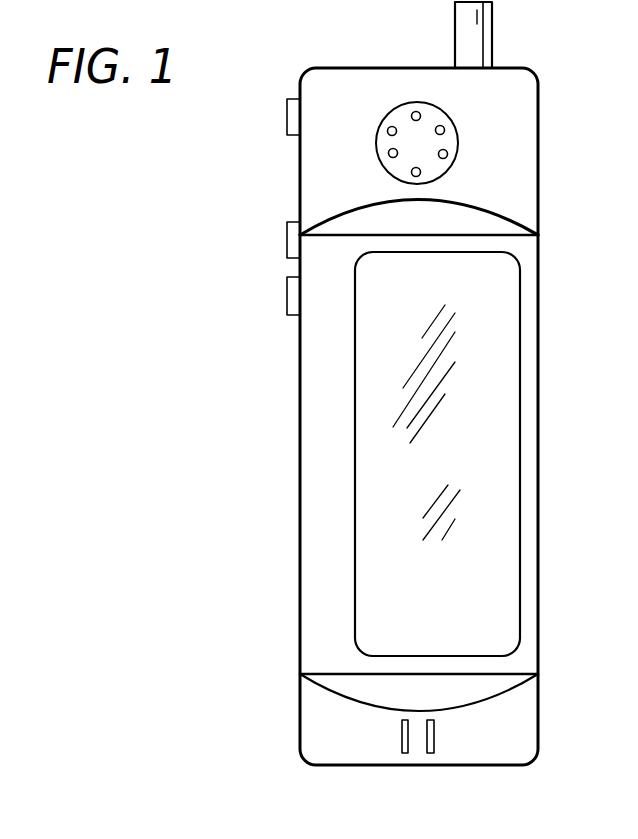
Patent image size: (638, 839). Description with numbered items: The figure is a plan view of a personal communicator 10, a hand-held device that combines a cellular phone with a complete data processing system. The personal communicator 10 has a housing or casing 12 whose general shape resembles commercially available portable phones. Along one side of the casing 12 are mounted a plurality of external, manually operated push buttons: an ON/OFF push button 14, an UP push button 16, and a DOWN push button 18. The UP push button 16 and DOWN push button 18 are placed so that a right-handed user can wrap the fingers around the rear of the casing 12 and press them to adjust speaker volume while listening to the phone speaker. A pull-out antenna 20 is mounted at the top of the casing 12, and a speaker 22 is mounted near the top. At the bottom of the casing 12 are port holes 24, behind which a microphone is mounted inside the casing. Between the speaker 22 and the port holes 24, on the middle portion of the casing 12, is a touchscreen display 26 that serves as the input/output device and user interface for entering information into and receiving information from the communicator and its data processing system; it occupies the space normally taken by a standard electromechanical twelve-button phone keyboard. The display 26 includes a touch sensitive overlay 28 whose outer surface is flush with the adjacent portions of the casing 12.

The personal communicator 10 is at (196, 292).
The housing 12 is at (300, 490).
The ON/OFF push button 14 is at (287, 114).
The UP push button 16 is at (287, 250).
The DOWN push button 18 is at (287, 292).
The pull-out antenna 20 is at (493, 37).
The speaker 22 is at (387, 140).
The port holes 24 is at (427, 733).
The touchscreen display 26 is at (520, 518).
The touch sensitive overlay 28 is at (446, 611).